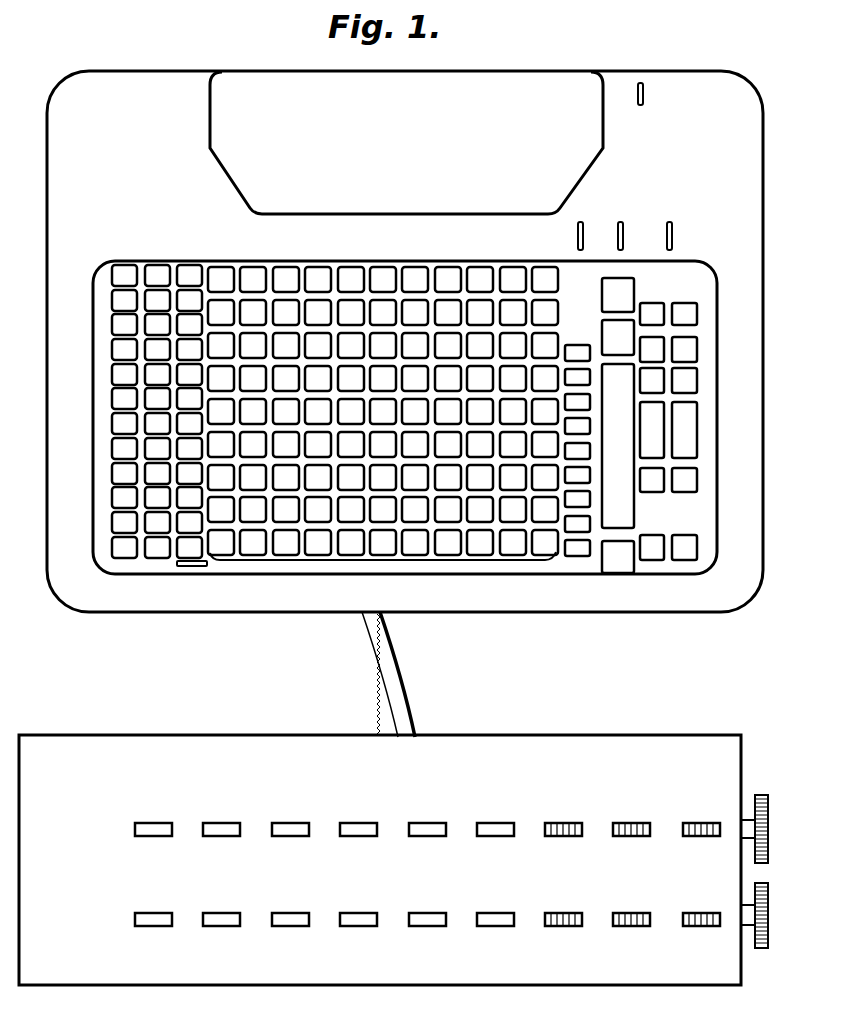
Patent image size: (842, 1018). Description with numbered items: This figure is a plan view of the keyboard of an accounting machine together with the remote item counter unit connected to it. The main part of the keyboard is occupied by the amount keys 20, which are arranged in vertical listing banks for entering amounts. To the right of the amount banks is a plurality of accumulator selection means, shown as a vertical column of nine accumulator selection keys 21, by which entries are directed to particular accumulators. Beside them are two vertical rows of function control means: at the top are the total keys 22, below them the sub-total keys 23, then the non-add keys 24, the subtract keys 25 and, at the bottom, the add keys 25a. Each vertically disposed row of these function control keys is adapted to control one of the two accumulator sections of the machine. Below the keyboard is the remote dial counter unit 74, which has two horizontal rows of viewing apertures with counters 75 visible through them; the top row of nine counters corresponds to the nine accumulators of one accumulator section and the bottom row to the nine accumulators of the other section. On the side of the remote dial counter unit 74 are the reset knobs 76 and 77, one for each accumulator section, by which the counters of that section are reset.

The amount keys 20 is at (387, 560).
The accumulator selection keys 21 is at (583, 520).
The total keys 22 is at (686, 305).
The sub-total keys 23 is at (690, 352).
The non-add keys 24 is at (690, 384).
The subtract keys 25 is at (690, 428).
The add keys 25a is at (690, 549).
The remote dial counter unit 74 is at (401, 990).
The counters 75 is at (705, 912).
The reset knob 76 is at (756, 795).
The reset knob 77 is at (757, 950).